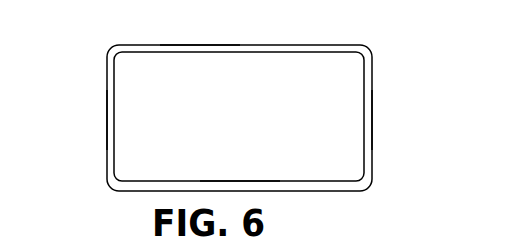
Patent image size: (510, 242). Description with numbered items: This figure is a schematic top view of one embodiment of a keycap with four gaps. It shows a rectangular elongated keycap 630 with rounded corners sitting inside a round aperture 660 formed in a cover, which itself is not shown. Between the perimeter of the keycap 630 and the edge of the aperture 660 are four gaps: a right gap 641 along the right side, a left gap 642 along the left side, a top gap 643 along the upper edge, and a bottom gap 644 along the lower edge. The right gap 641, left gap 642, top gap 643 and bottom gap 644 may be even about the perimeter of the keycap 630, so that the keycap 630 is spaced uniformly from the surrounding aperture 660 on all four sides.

The round aperture 660 is at (372, 51).
The rectangular elongated keycap 630 is at (259, 127).
The right gap 641 is at (372, 120).
The left gap 642 is at (107, 124).
The top gap 643 is at (190, 44).
The bottom gap 644 is at (236, 181).